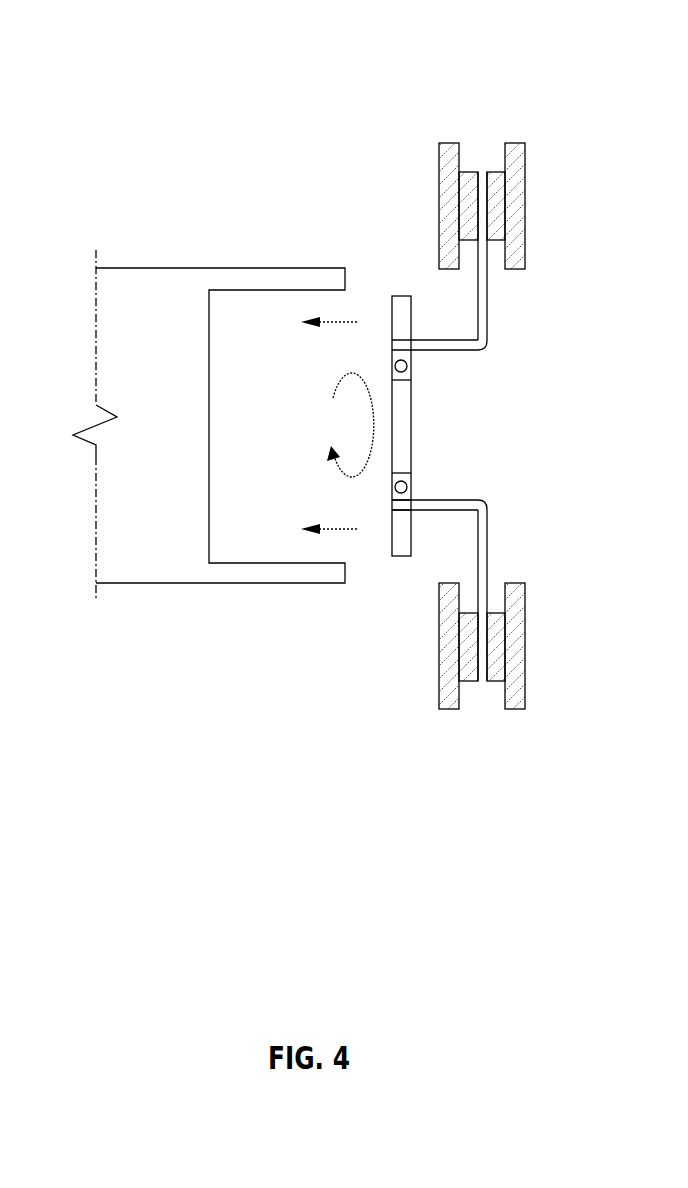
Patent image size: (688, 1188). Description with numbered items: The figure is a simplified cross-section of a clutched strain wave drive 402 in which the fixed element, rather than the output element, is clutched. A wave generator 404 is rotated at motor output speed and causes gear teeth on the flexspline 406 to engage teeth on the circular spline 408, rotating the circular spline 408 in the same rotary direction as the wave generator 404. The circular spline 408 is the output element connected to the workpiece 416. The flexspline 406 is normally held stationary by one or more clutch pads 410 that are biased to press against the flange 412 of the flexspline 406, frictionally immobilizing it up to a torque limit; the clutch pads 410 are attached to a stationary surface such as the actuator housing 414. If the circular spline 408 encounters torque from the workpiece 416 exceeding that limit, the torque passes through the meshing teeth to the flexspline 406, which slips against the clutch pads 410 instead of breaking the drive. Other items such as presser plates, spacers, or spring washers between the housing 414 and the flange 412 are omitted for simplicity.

The clutched strain wave drive 402 is at (345, 85).
The wave generator 404 is at (410, 432).
The flexspline 406 is at (482, 338).
The circular spline 408 is at (403, 538).
The clutch pads 410 is at (497, 160).
The flange 412 is at (478, 287).
The actuator housing 414 is at (518, 157).
The workpiece 416 is at (125, 333).